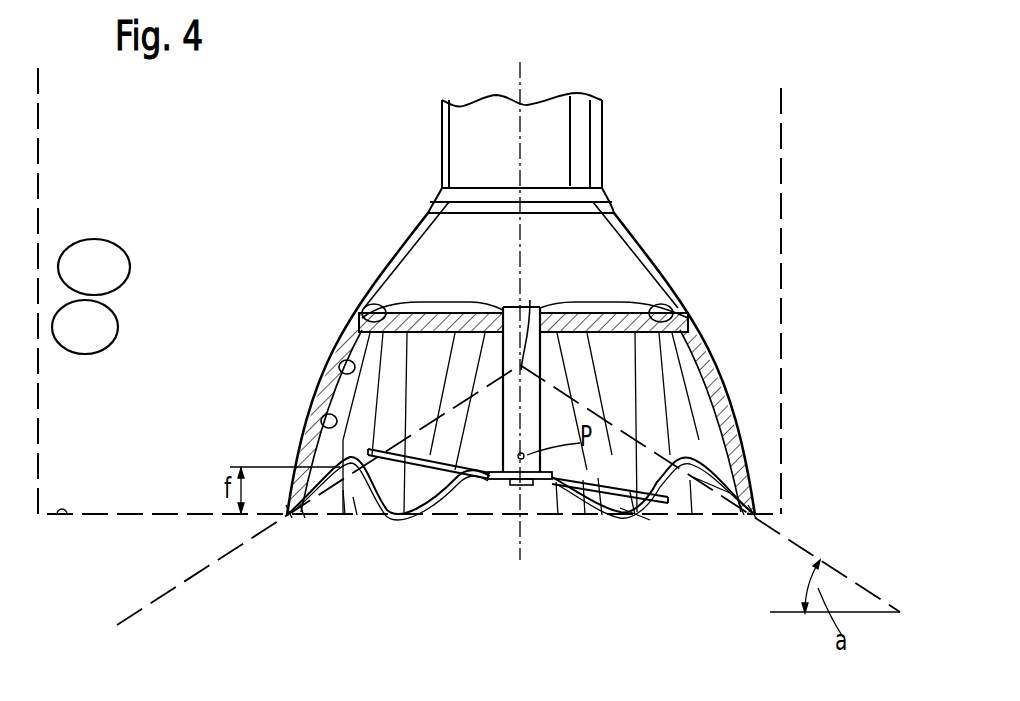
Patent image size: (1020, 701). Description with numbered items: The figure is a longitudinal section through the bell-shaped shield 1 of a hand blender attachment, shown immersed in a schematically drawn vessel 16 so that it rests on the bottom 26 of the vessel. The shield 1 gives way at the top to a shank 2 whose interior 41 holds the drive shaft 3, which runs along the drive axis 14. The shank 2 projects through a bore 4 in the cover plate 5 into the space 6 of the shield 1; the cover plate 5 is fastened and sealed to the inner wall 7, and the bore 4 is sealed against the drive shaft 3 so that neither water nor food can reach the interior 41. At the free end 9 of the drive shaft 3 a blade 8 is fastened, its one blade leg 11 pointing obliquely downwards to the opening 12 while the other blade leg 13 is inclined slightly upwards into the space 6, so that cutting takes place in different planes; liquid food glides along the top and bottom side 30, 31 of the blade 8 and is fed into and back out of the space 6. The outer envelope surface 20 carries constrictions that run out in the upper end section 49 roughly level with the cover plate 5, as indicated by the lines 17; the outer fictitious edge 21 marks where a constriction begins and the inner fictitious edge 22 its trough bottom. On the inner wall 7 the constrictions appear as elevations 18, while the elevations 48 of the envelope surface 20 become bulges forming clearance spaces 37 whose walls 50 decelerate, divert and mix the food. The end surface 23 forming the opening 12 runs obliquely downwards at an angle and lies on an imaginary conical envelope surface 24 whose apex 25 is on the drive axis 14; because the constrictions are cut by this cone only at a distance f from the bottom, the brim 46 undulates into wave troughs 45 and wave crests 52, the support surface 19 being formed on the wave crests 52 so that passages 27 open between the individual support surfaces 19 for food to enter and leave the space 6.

The shield 1 is at (636, 225).
The shank 2 is at (577, 128).
The drive shaft 3 is at (512, 308).
The bore 4 is at (482, 303).
The cover plate 5 is at (600, 310).
The space 6 is at (540, 488).
The inner wall 7 is at (330, 380).
The blade 8 is at (583, 480).
The free end 9 is at (517, 486).
The blade leg 11 is at (598, 478).
The opening 12 is at (734, 505).
The blade leg 13 is at (395, 487).
The drive axis 14 is at (518, 82).
The vessel 16 is at (781, 157).
The lines 17 is at (380, 296).
The elevation 18 is at (356, 470).
The support surface 19 is at (753, 515).
The envelope surface 20 is at (703, 342).
The outer fictitious edge 21 is at (587, 390).
The inner fictitious edge 22 is at (547, 410).
The end surface 23 is at (746, 516).
The conical envelope surface 24 is at (855, 583).
The apex 25 is at (530, 306).
The surface / bottom 26 is at (62, 520).
The passages 27 is at (690, 480).
The top side 30 is at (684, 456).
The bottom side 31 is at (435, 482).
The clearance spaces 37 is at (405, 487).
The interior 41 is at (418, 305).
The wave troughs 45 is at (497, 483).
The brim 46 is at (637, 520).
The elevations 48 is at (642, 396).
The upper end section 49 is at (362, 306).
The walls 50 is at (338, 352).
The wave crests 52 is at (630, 492).